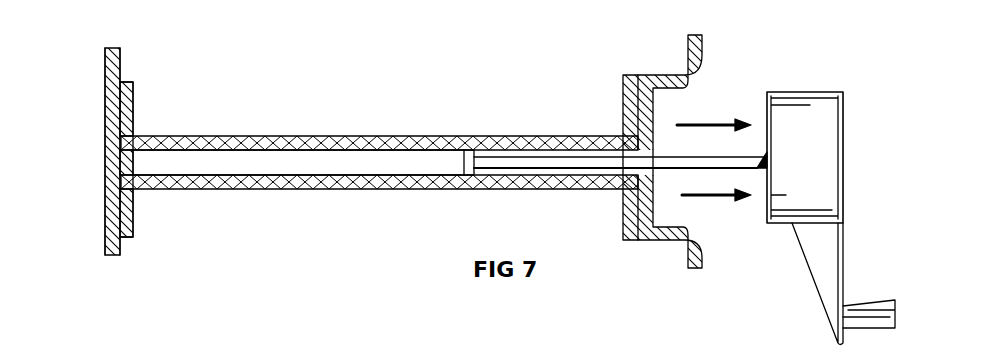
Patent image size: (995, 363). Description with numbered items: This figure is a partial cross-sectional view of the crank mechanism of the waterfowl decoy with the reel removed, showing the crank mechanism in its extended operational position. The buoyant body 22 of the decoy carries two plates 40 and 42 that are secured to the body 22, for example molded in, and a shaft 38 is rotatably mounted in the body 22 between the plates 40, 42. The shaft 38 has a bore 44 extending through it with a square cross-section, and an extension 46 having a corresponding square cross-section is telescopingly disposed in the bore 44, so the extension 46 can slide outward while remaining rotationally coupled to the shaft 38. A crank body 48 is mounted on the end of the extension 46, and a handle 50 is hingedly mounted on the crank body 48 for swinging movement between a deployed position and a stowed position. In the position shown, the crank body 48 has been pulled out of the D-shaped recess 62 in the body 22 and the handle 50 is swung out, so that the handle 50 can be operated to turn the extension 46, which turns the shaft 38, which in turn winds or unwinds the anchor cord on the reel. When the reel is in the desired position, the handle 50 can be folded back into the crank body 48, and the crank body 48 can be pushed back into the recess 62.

The buoyant body 22 is at (105, 232).
The shaft 38 is at (262, 136).
The plate 40 is at (133, 236).
The plate 42 is at (623, 228).
The bore 44 is at (243, 163).
The extension 46 is at (510, 160).
The crank body 48 is at (802, 108).
The handle 50 is at (818, 257).
The recess 62 is at (675, 105).